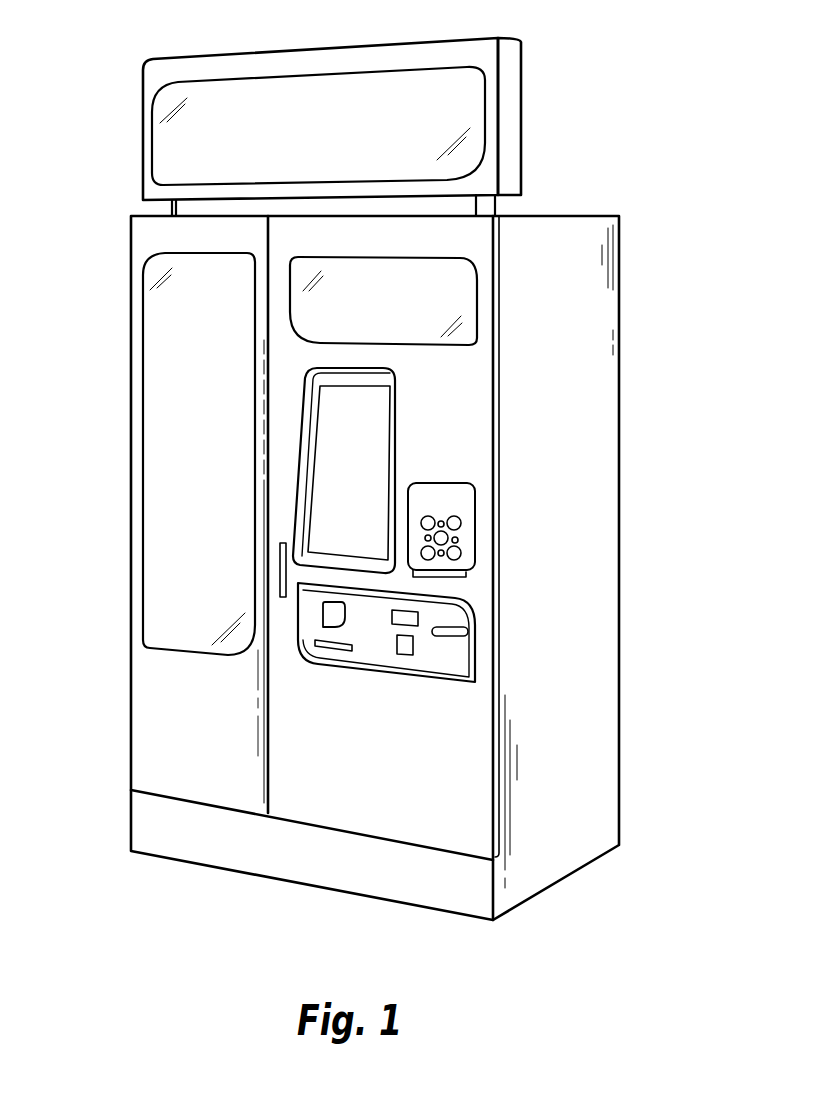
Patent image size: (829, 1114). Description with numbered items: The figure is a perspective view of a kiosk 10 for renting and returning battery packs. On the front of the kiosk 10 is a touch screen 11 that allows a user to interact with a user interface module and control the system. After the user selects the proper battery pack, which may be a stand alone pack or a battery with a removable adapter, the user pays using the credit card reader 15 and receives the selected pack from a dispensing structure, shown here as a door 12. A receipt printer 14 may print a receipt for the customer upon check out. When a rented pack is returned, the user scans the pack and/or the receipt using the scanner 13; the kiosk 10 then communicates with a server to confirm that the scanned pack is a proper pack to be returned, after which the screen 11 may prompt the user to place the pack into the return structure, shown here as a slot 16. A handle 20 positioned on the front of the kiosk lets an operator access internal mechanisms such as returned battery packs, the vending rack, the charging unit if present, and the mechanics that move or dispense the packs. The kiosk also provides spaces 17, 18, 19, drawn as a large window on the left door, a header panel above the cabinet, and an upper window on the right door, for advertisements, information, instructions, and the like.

The kiosk 10 is at (577, 320).
The touch screen 11 is at (385, 423).
The door 12 is at (458, 530).
The scanner 13 is at (407, 655).
The receipt printer 14 is at (328, 648).
The credit card reader 15 is at (463, 628).
The slot 16 is at (323, 615).
The space 17 is at (160, 452).
The space 18 is at (245, 97).
The space 19 is at (447, 278).
The handle 20 is at (283, 570).